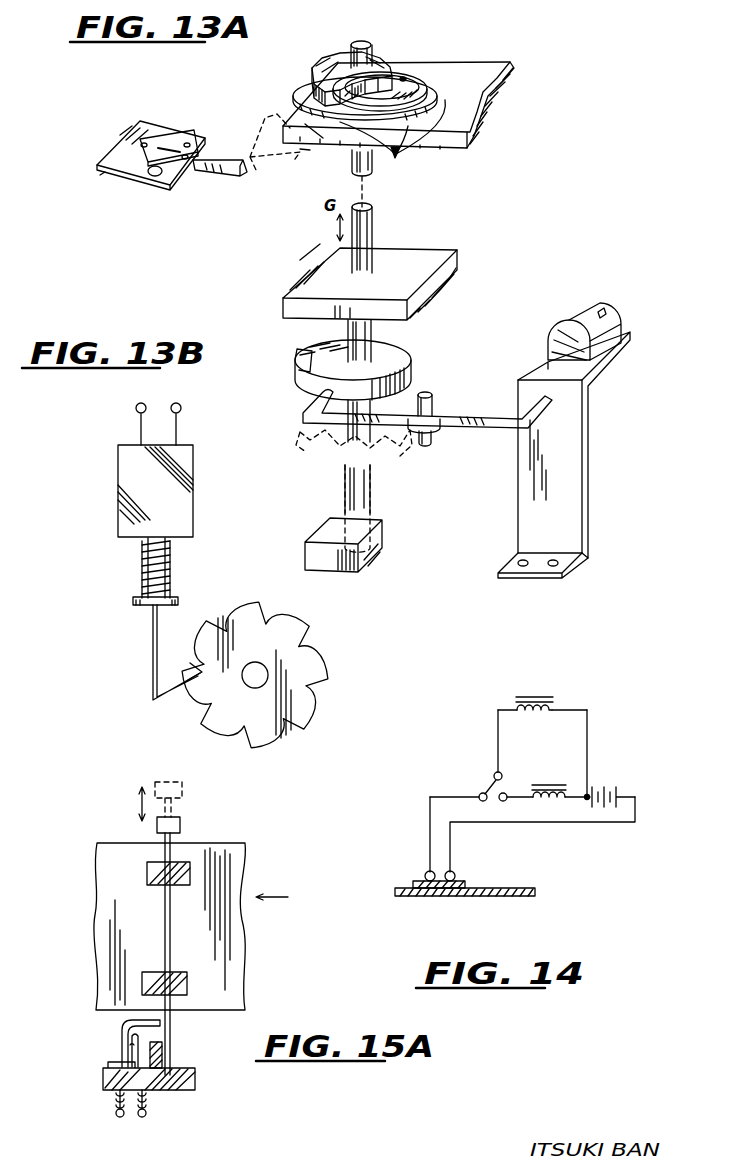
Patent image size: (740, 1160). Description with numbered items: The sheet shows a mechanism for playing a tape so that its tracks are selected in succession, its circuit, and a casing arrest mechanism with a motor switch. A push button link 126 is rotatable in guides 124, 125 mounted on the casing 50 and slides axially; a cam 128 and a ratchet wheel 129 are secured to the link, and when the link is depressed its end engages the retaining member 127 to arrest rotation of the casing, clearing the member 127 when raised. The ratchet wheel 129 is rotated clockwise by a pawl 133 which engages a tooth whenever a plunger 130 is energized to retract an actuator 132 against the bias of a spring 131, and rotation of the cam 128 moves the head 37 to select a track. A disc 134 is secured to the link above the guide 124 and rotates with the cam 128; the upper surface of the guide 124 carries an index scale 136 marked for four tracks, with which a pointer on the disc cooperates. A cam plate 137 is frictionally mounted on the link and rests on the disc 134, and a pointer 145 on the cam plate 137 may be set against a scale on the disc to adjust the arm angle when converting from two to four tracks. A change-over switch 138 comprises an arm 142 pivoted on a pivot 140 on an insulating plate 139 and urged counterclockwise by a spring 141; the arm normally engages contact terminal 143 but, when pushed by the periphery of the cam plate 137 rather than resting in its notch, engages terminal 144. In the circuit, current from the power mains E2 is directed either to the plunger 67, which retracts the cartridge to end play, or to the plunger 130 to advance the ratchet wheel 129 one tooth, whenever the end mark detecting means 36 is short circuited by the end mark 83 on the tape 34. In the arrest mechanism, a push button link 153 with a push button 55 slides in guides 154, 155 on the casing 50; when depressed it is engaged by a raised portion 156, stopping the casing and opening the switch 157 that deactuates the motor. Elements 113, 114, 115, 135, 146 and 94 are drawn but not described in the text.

In FIG. 13A, the head 37 is at (560, 320).
In FIG. 13A, the bracket 113 is at (574, 442).
In FIG. 13A, the pin 114 is at (450, 389).
In FIG. 13A, the arm 115 is at (478, 428).
In FIG. 13A, the guide 124 is at (466, 140).
In FIG. 13A, the guide 125 is at (396, 256).
In FIG. 13A, the push button link 126 is at (371, 176).
In FIG. 13B, the push button link 126 is at (268, 672).
In FIG. 13A, the retaining member 127 is at (383, 546).
In FIG. 13A, the cam 128 is at (388, 366).
In FIG. 13A, the ratchet wheel 129 is at (310, 452).
In FIG. 13B, the ratchet wheel 129 is at (275, 640).
In FIG. 13B, the plunger 130 is at (190, 496).
In FIG. 14, the plunger 130 is at (534, 698).
In FIG. 13B, the spring 131 is at (172, 584).
In FIG. 13B, the actuator 132 is at (172, 558).
In FIG. 13B, the pawl 133 is at (174, 708).
In FIG. 13A, the disc 134 is at (423, 78).
In FIG. 13A, the ring 135 is at (438, 94).
In FIG. 13A, the index scale 136 is at (396, 159).
In FIG. 13A, the cam plate 137 is at (316, 78).
In FIG. 13A, the change-over switch 138 is at (118, 199).
In FIG. 14, the change-over switch 138 is at (488, 792).
In FIG. 13A, the insulating plate 139 is at (120, 150).
In FIG. 13A, the pivot 140 is at (146, 130).
In FIG. 13A, the spring 141 is at (198, 150).
In FIG. 13A, the arm 142 is at (215, 172).
In FIG. 13A, the contact terminal 143 is at (170, 150).
In FIG. 13A, the contact terminal 144 is at (155, 176).
In FIG. 13A, the pointer 145 is at (264, 164).
In FIG. 13A, the line 146 is at (300, 152).
In FIG. 14, the plunger 67 is at (548, 784).
In FIG. 14, the power mains E2 is at (600, 792).
In FIG. 14, the end mark detecting means 36 is at (426, 875).
In FIG. 14, the end mark 83 is at (460, 882).
In FIG. 14, the tape 34 is at (486, 899).
In FIG. 15A, the push button 55 is at (182, 822).
In FIG. 15A, the casing 50 is at (222, 842).
In FIG. 15A, the push button link 153 is at (164, 940).
In FIG. 15A, the guide 154 is at (147, 872).
In FIG. 15A, the guide 155 is at (187, 982).
In FIG. 15A, the raised portion 156 is at (164, 1062).
In FIG. 15A, the switch 157 is at (126, 1054).
In FIG. 15A, the base 94 is at (178, 1092).